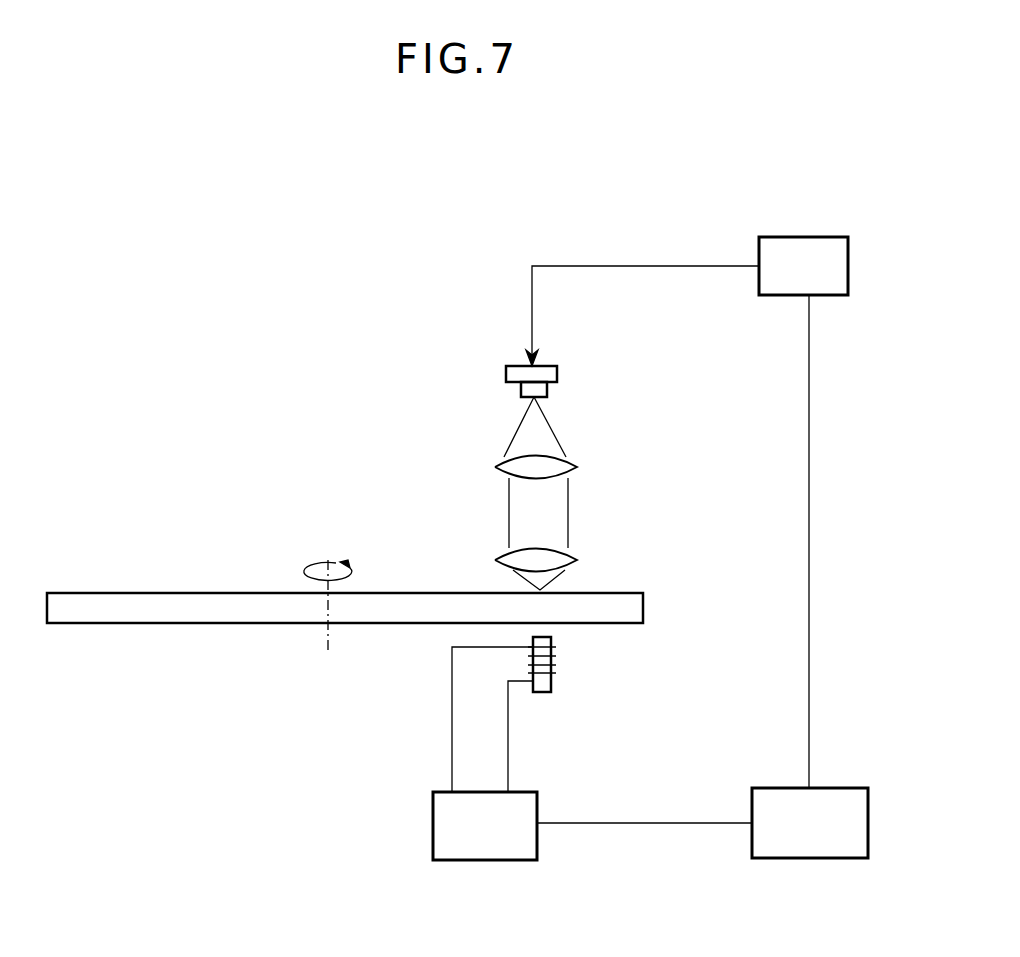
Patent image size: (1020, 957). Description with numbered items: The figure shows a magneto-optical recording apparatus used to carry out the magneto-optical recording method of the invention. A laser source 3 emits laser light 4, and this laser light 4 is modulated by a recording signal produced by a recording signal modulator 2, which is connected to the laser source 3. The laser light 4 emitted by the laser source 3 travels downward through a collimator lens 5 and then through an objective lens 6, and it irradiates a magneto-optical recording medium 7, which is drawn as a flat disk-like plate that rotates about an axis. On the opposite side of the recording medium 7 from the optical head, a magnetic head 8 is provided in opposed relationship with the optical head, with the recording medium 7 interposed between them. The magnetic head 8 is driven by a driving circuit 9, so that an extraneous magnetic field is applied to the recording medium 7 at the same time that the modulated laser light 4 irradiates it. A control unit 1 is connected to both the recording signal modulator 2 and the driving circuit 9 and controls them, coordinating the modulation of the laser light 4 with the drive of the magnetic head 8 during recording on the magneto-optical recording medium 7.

The control unit 1 is at (855, 859).
The recording signal modulator 2 is at (808, 237).
The laser source 3 is at (558, 379).
The laser light 4 is at (571, 493).
The collimator lens 5 is at (577, 464).
The objective lens 6 is at (578, 561).
The magneto-optical recording medium 7 is at (228, 600).
The magnetic head 8 is at (553, 684).
The driving circuit 9 is at (543, 844).